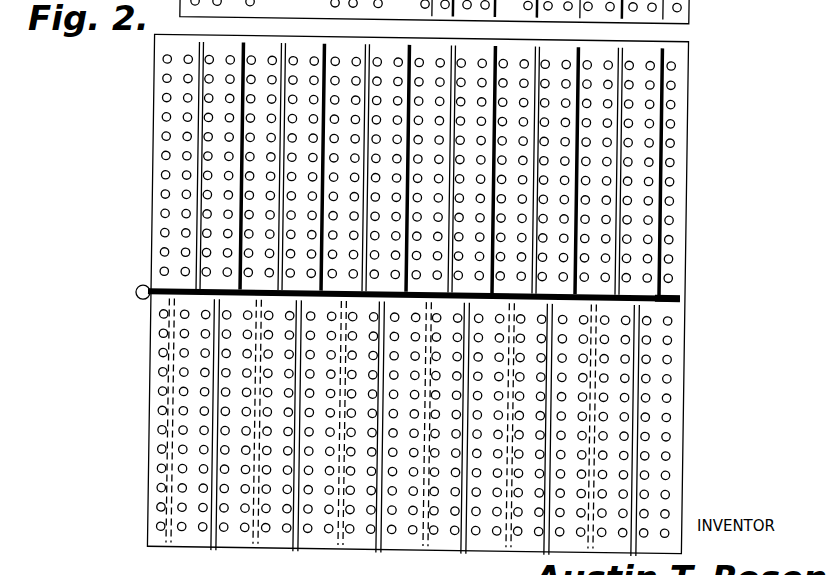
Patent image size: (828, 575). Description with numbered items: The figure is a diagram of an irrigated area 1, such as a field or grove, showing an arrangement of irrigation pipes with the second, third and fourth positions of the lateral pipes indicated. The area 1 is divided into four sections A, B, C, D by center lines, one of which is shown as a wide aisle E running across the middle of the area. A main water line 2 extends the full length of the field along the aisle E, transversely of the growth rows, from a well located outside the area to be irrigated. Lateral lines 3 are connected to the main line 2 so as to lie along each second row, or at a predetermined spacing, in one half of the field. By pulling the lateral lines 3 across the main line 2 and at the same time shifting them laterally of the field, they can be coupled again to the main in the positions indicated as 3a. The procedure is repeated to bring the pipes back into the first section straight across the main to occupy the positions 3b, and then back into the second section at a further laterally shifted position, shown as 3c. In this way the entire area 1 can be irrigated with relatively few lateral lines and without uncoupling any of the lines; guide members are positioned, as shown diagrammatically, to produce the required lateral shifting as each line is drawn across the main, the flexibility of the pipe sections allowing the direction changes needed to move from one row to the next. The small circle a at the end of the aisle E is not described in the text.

The area 1 is at (666, 352).
The main water line 2 is at (661, 302).
The lateral lines 3 is at (322, 165).
The lateral line second position 3a is at (640, 388).
The lateral line third position 3b is at (367, 55).
The lateral line fourth position 3c is at (600, 444).
The aisle E is at (650, 290).
The pivot a is at (141, 299).
The section A is at (260, 137).
The section B is at (512, 152).
The section C is at (492, 423).
The section D is at (277, 397).